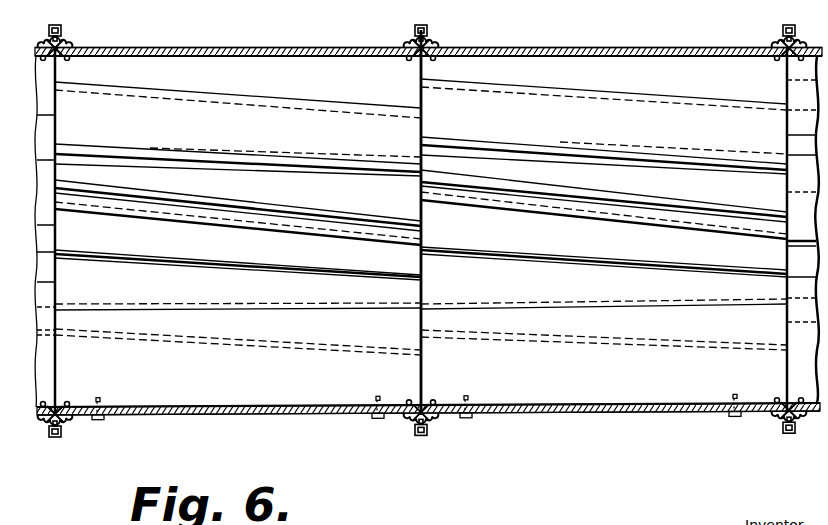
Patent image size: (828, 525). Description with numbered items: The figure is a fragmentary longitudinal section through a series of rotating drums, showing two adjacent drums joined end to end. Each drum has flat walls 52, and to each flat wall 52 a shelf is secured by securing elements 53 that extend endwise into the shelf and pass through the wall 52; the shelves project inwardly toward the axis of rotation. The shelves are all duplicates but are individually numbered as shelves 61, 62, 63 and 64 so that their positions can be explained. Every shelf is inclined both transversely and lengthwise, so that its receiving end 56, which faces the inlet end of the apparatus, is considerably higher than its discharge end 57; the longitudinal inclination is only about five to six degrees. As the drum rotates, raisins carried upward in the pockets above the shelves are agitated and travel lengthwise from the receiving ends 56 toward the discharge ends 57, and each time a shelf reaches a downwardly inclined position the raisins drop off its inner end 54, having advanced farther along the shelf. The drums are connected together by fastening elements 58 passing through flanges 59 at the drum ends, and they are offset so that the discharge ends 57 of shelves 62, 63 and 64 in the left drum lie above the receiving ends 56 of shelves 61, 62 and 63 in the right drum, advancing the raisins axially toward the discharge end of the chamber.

The flat wall 52 is at (305, 72).
The securing elements 53 is at (98, 418).
The inner end of shelf 54 is at (307, 163).
The receiving end of shelf 56 is at (62, 117).
The discharge end of shelf 57 is at (428, 138).
The fastening elements 58 is at (62, 26).
The flanges 59 is at (430, 27).
The shelf 61 is at (182, 380).
The shelf 62 is at (180, 278).
The shelf 63 is at (250, 213).
The shelf 64 is at (276, 125).